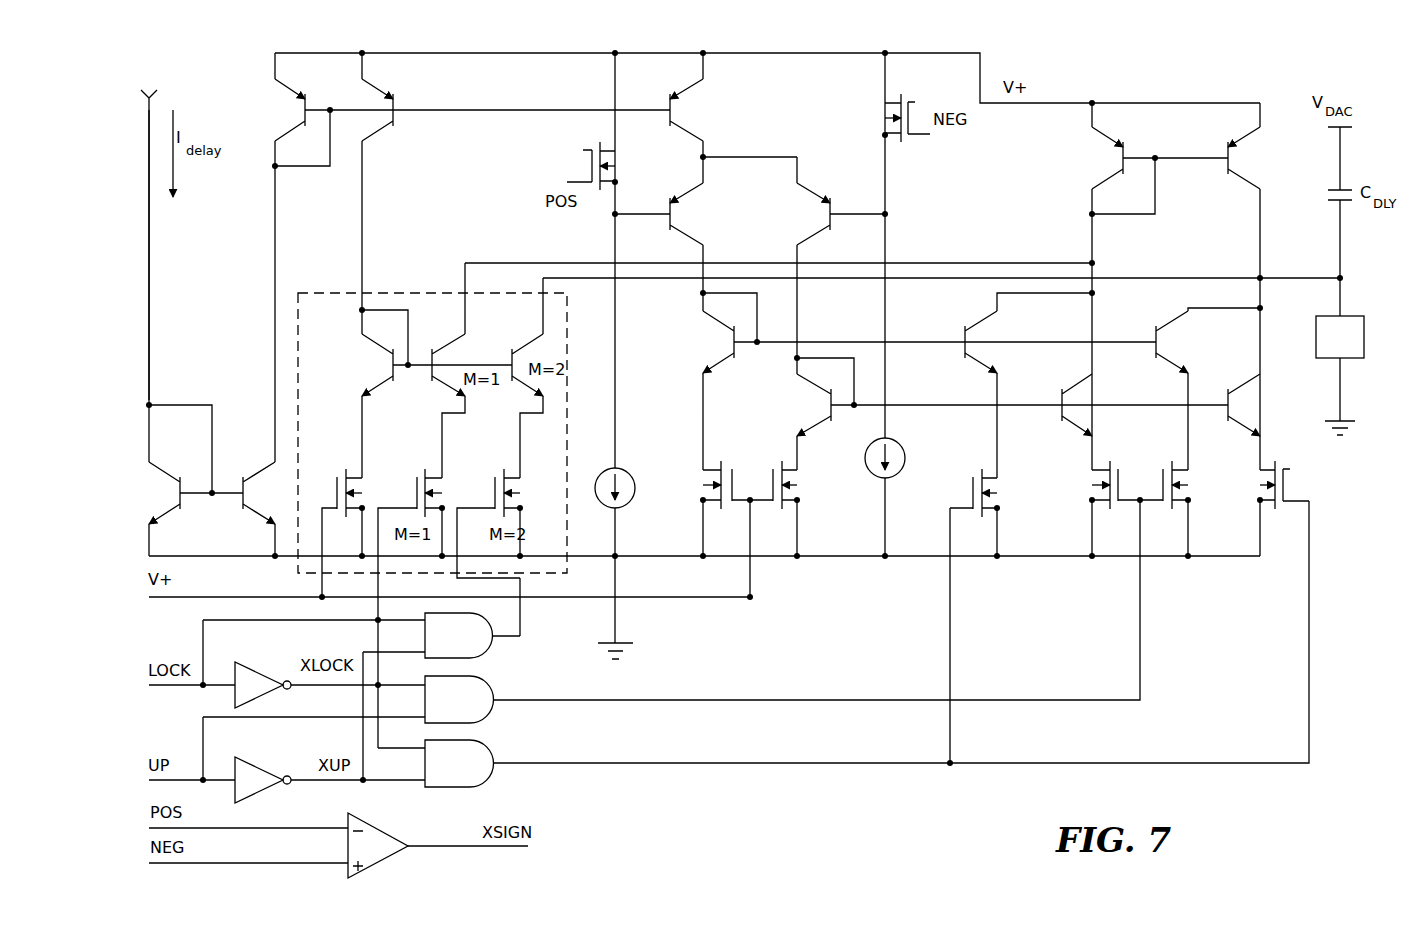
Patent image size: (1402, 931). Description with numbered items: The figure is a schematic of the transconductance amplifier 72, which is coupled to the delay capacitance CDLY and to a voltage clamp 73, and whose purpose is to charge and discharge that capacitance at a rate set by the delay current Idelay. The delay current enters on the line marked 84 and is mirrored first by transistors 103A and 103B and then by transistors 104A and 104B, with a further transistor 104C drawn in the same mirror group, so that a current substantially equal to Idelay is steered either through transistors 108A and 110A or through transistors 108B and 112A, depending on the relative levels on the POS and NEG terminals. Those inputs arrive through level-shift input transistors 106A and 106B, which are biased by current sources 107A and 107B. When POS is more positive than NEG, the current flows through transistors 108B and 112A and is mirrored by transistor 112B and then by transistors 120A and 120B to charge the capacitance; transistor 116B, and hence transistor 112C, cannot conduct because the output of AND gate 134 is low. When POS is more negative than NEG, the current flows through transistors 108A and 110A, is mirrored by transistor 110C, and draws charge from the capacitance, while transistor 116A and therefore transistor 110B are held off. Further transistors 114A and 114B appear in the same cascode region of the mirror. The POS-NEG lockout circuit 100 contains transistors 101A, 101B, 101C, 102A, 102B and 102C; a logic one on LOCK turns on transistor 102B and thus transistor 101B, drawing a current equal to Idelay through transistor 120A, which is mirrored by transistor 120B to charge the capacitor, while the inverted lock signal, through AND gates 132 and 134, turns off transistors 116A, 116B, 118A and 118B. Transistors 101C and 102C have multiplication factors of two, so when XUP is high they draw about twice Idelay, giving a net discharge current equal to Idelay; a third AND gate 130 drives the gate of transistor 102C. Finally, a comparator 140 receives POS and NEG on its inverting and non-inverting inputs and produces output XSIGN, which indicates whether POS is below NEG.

The transconductance amplifier 72 is at (1165, 84).
The voltage clamp 73 is at (1352, 347).
The delay current input node 84 is at (149, 279).
The POS-NEG lockout circuit 100 is at (340, 326).
The transistor 101A is at (365, 365).
The transistor 101B is at (465, 365).
The transistor 101C is at (512, 350).
The transistor 102A is at (340, 490).
The transistor 102B is at (417, 490).
The transistor 102C is at (495, 490).
The transistor 103A is at (154, 493).
The transistor 103B is at (268, 493).
The transistor 104A is at (322, 88).
The transistor 104B is at (410, 88).
The PNP current mirror transistor 104C is at (701, 110).
The input transistor 106A is at (615, 166).
The input transistor 106B is at (886, 118).
The current source 107A is at (636, 481).
The current source 107B is at (908, 454).
The transistor 108A is at (702, 214).
The transistor 108B is at (801, 214).
The transistor 110A is at (707, 342).
The transistor 110B is at (1005, 342).
The transistor 110C is at (1185, 342).
The transistor 112A is at (803, 405).
The transistor 112B is at (1102, 405).
The transistor 112C is at (1257, 405).
The cascode MOSFET 114A is at (740, 482).
The cascode MOSFET 114B is at (770, 482).
The transistor 116A is at (971, 486).
The transistor 116B is at (1299, 485).
The transistor 118A is at (1105, 482).
The transistor 118B is at (1158, 482).
The transistor 120A is at (1091, 158).
The transistor 120B is at (1260, 158).
The AND gate 130 is at (466, 646).
The AND gate 132 is at (466, 710).
The AND gate 134 is at (466, 774).
The comparator 140 is at (385, 840).